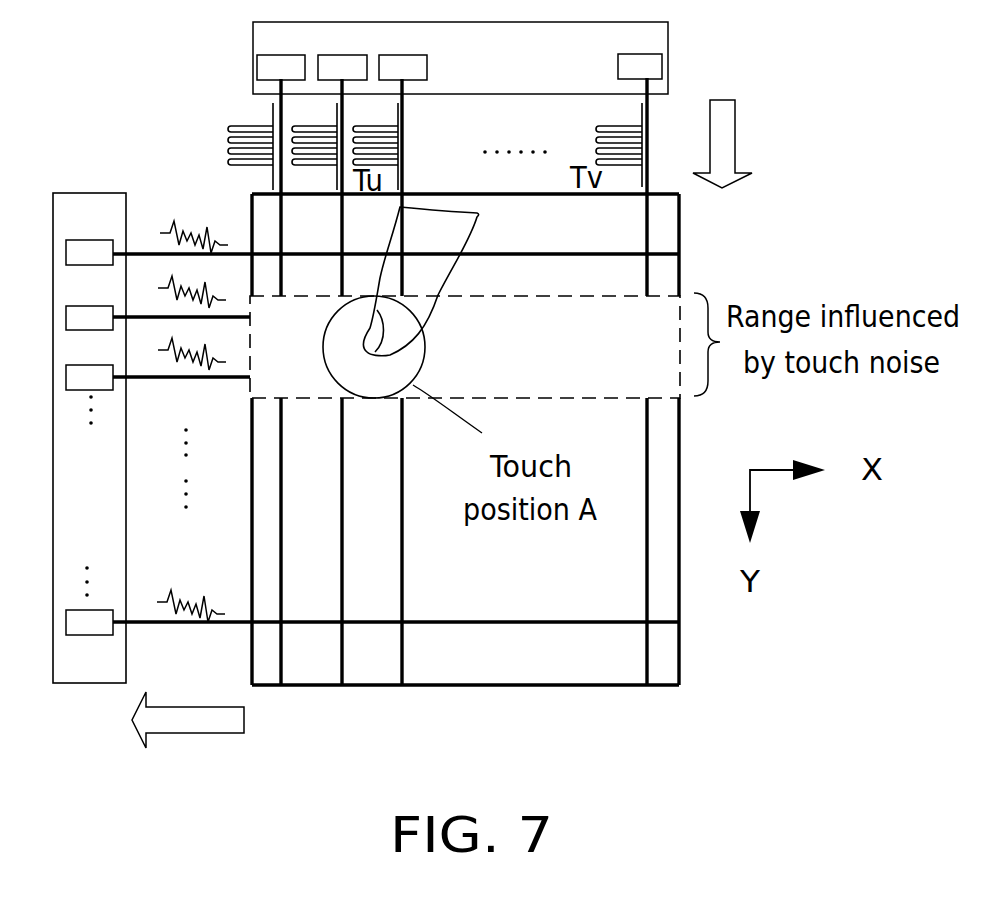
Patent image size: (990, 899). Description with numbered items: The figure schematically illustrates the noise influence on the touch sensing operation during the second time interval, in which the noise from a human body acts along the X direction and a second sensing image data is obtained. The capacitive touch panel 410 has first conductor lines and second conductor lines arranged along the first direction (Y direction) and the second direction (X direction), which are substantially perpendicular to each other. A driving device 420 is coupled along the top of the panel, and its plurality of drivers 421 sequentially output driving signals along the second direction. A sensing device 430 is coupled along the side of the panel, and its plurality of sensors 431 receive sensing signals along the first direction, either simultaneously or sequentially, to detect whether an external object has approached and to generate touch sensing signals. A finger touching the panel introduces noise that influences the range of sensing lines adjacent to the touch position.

The capacitive touch panel 410 is at (375, 685).
The driving device 420 is at (257, 60).
The driver 421 is at (256, 68).
The sensing device 430 is at (83, 192).
The sensor 431 is at (93, 636).